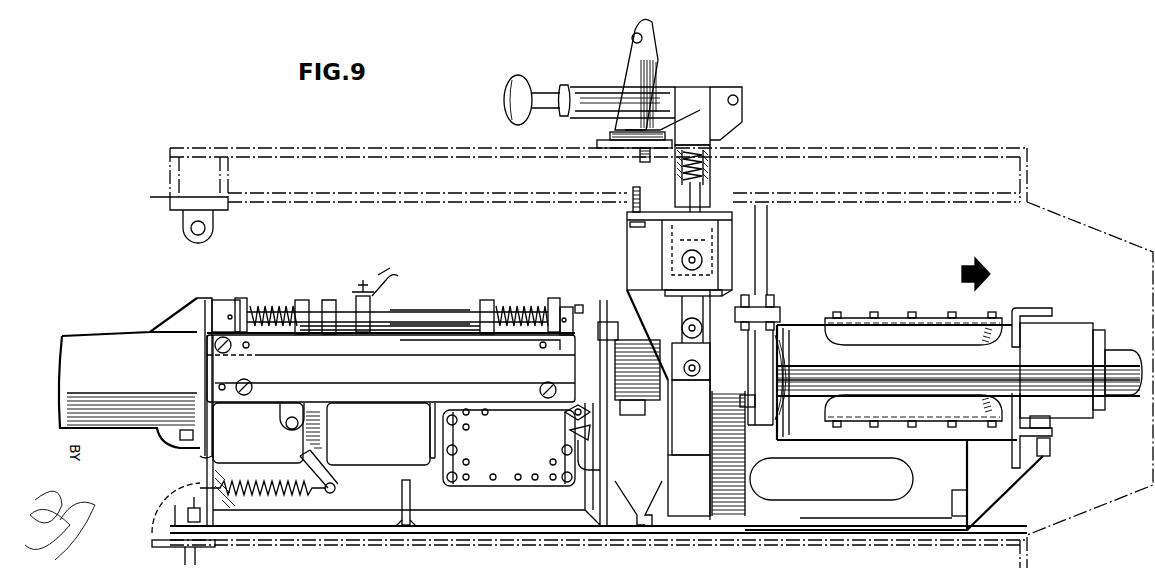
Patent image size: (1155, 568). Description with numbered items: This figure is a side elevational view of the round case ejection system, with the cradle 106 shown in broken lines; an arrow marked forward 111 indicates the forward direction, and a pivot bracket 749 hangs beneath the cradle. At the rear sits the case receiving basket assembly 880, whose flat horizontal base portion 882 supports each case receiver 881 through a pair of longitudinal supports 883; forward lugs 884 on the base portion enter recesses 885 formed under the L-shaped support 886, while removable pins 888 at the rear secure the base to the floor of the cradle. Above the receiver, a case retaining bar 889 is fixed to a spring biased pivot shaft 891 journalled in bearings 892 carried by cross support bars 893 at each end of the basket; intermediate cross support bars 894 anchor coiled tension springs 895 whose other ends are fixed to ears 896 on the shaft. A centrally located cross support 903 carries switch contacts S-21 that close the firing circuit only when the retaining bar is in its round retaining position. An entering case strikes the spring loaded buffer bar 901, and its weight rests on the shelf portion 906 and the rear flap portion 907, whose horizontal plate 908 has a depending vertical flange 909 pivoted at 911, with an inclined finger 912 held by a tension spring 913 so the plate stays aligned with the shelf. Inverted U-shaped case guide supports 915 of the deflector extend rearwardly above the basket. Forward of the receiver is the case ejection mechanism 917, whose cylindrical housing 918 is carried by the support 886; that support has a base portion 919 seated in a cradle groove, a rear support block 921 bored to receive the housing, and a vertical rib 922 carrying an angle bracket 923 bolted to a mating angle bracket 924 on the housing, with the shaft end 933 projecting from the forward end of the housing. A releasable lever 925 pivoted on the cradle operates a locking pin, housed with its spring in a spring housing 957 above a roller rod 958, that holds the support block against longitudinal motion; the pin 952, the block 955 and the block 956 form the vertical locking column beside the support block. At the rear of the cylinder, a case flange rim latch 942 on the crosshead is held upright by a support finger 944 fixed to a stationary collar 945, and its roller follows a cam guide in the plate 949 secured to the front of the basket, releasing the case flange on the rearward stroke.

The cradle 106 is at (848, 134).
The forward direction 111 is at (922, 256).
The pivot bracket 749 is at (183, 224).
The case receiving basket assembly 880 is at (430, 304).
The case receiver 881 is at (396, 409).
The base portion 882 is at (468, 528).
The longitudinal supports 883 is at (410, 430).
The forward lugs 884 is at (640, 528).
The recesses 885 is at (657, 528).
The L-shaped support 886 is at (797, 529).
The removable pins 888 is at (188, 510).
The case retaining bar 889 is at (326, 336).
The pivot shaft 891 is at (460, 300).
The bearings 892 is at (216, 300).
The cross support bars 893 is at (198, 298).
The cross support bars 894 is at (302, 300).
The coiled tension springs 895 is at (265, 305).
The ears 896 is at (240, 298).
The buffer bar 901 is at (391, 367).
The cross support 903 is at (400, 300).
The shelf portion 906 is at (455, 395).
The rear flap portion 907 is at (277, 418).
The horizontal plate 908 is at (262, 392).
The vertical flange 909 is at (258, 455).
The pivot 911 is at (294, 418).
The finger 912 is at (323, 470).
The tension spring 913 is at (282, 480).
The case guide supports 915 is at (129, 373).
The case ejection mechanism 917 is at (967, 309).
The cylindrical housing 918 is at (808, 400).
The base portion 919 is at (916, 528).
The support block 921 is at (689, 485).
The vertical rib 922 is at (856, 484).
The angle bracket 923 is at (1038, 468).
The angle bracket 924 is at (1052, 428).
The lever 925 is at (590, 88).
The shaft end 933 is at (1128, 403).
The case flange rim latch 942 is at (559, 423).
The support finger 944 is at (586, 445).
The stationary collar 945 is at (626, 402).
The plate 949 is at (509, 447).
The pin 952 is at (700, 370).
The block 955 is at (691, 361).
The block 956 is at (691, 417).
The spring housing 957 is at (706, 190).
The roller rod 958 is at (690, 306).
The switch contacts S-21 is at (355, 292).